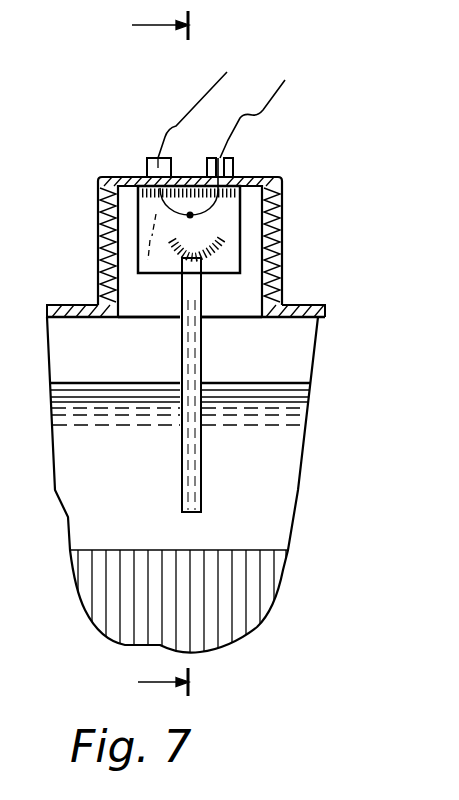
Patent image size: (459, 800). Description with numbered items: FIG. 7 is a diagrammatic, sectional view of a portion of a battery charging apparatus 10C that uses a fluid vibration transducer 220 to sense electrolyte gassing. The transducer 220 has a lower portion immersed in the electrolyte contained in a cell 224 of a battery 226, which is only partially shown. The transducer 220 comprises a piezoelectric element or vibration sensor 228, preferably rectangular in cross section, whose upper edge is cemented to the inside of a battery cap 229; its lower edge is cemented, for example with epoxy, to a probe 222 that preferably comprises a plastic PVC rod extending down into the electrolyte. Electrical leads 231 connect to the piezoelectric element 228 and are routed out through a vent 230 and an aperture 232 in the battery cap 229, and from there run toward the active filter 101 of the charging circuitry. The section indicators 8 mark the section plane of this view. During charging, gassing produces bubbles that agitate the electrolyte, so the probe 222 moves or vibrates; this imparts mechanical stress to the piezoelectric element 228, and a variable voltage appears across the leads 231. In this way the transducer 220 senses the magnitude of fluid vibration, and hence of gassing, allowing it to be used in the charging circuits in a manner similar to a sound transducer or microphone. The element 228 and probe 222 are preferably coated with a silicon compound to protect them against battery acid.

The section line 8- 8 is at (148, 353).
The active filter 101 is at (280, 50).
The battery charging apparatus 10C is at (374, 115).
The fluid vibration transducer 220 is at (230, 275).
The probe 222 is at (192, 432).
The cell 224 is at (284, 469).
The battery 226 is at (323, 312).
The piezoelectric element 228 is at (220, 232).
The battery cap 229 is at (281, 184).
The vent 230 is at (146, 167).
The electrical leads 231 is at (193, 108).
The aperture 232 is at (234, 162).